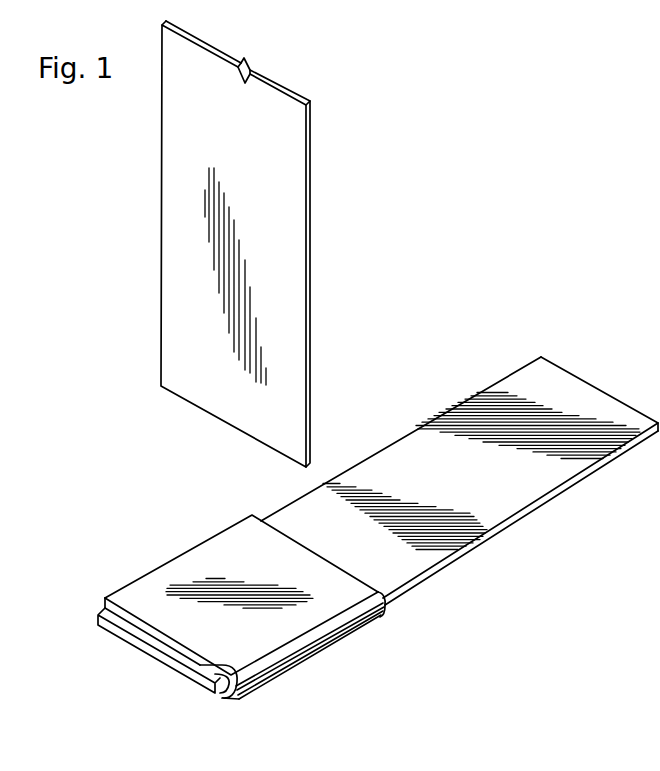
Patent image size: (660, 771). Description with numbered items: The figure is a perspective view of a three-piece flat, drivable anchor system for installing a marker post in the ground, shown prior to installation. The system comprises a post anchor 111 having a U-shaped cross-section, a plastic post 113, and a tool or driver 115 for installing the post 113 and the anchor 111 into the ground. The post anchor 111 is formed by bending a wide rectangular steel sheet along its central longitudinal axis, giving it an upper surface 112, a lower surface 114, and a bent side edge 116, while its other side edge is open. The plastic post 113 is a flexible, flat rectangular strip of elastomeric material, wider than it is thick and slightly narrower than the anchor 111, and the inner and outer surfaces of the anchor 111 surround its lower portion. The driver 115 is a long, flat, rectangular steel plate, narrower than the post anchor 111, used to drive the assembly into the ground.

The post anchor 111 is at (295, 675).
The upper surface 112 is at (138, 595).
The plastic post 113 is at (512, 522).
The lower surface 114 is at (226, 700).
The driver 115 is at (313, 284).
The bent side edge 116 is at (352, 632).